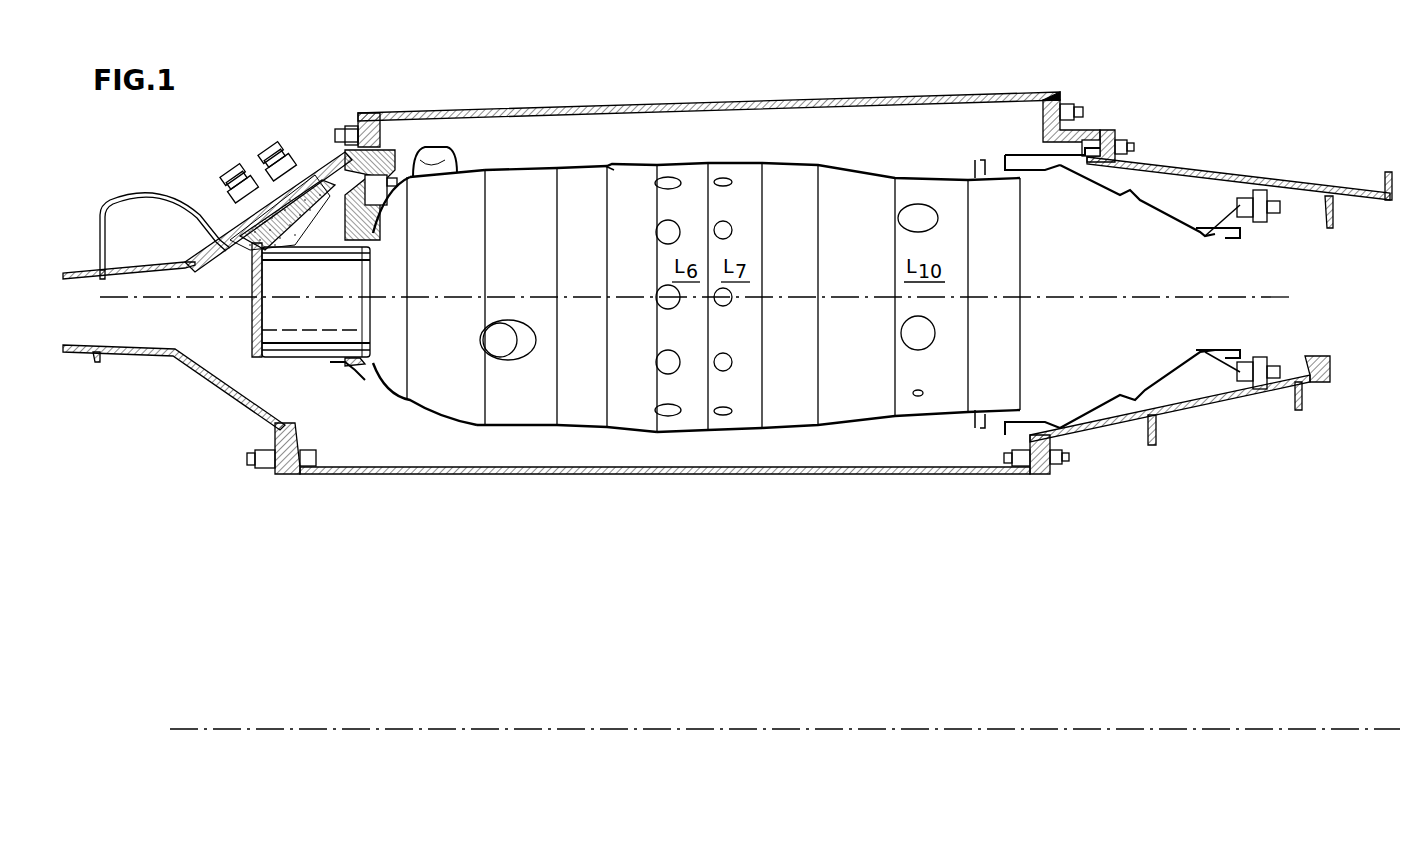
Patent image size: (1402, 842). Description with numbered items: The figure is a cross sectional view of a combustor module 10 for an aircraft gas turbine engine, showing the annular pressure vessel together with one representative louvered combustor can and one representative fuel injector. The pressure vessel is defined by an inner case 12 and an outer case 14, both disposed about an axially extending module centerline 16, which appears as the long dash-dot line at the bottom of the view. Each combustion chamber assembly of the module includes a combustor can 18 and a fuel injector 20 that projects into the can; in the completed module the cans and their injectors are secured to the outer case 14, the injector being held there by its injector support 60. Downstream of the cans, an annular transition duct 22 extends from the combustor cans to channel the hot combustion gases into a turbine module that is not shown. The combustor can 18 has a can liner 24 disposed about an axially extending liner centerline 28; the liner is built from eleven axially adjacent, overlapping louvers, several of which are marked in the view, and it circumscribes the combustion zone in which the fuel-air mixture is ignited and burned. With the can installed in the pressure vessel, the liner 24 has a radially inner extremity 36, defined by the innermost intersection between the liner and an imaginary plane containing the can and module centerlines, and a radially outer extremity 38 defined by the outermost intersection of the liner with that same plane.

The combustor module 10 is at (926, 57).
The inner case 12 is at (805, 478).
The outer case 14 is at (510, 112).
The module centerline 16 is at (860, 729).
The combustor can 18 is at (508, 430).
The fuel injector 20 is at (328, 289).
The annular transition duct 22 is at (1142, 378).
The can liner 24 is at (705, 435).
The liner centerline 28 is at (1200, 291).
The radially inner extremity 36 is at (620, 433).
The radially outer extremity 38 is at (572, 162).
The injector support 60 is at (302, 185).